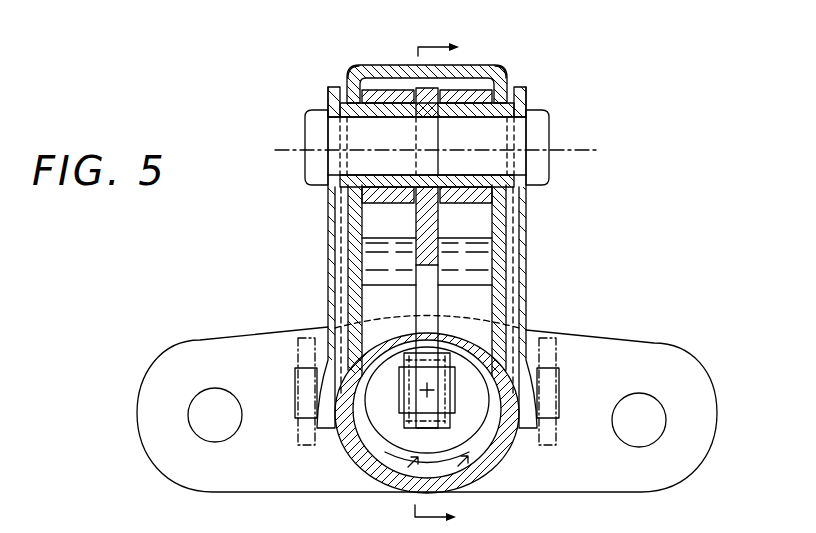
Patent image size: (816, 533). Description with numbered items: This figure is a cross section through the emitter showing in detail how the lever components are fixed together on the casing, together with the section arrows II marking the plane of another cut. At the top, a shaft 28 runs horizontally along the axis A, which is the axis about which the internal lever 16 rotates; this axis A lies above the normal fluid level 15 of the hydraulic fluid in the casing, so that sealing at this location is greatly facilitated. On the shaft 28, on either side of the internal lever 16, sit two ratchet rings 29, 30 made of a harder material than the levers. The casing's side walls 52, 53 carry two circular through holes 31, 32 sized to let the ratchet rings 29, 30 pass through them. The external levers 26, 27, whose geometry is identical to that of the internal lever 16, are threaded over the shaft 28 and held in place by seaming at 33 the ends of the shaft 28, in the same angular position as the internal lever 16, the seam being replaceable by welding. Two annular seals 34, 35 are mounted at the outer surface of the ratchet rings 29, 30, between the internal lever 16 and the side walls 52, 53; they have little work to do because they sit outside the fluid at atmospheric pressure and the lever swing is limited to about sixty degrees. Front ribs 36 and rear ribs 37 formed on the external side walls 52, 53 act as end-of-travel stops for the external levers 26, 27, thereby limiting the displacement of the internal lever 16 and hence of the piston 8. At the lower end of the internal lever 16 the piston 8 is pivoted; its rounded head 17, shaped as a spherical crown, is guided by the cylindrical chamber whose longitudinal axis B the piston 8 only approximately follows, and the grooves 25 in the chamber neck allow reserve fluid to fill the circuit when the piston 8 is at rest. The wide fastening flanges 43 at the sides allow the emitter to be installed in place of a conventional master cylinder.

The piston 8 is at (410, 470).
The normal fluid level 15 is at (495, 232).
The internal lever 16 is at (418, 88).
The head of the piston 17 is at (484, 472).
The grooves 25 is at (368, 462).
The external lever 26 is at (330, 313).
The external lever 27 is at (528, 320).
The shaft 28 is at (520, 127).
The ratchet ring 29 is at (348, 80).
The ratchet ring 30 is at (508, 82).
The circular through hole 31 is at (335, 190).
The circular through hole 32 is at (528, 195).
The seaming 33 is at (322, 108).
The annular seal 34 is at (386, 92).
The annular seal 35 is at (478, 88).
The front ribs 36 is at (340, 273).
The rear ribs 37 is at (427, 391).
The fastening flanges 43 is at (233, 355).
The side wall 52 is at (353, 238).
The side wall 53 is at (505, 277).
The axis A is at (429, 136).
The longitudinal axis B is at (432, 388).
The section arrows II is at (446, 283).